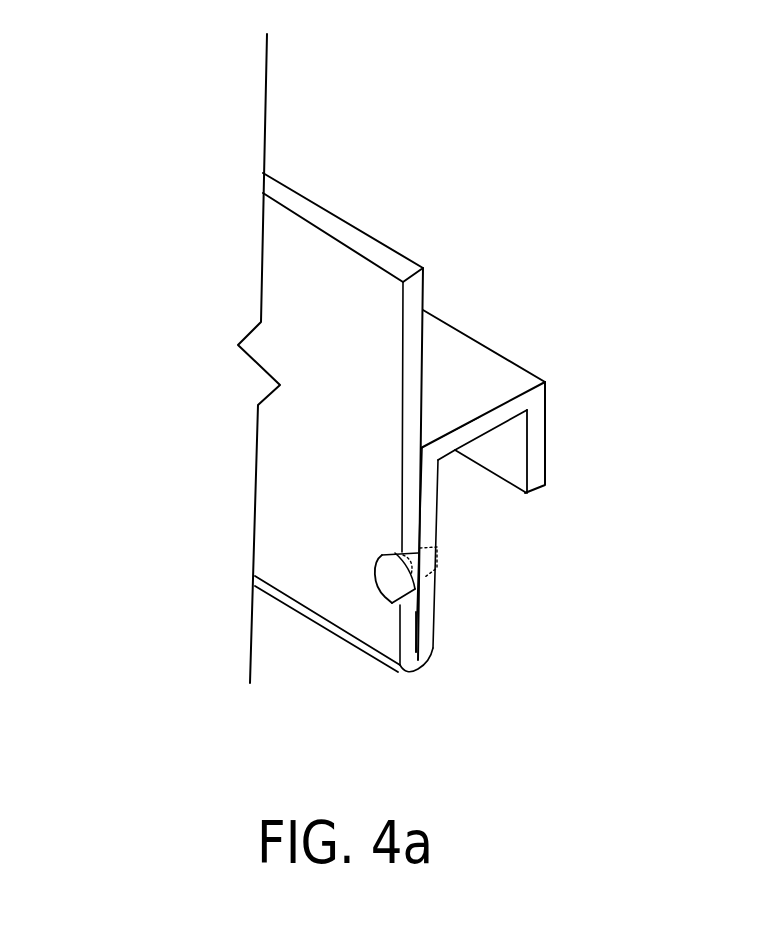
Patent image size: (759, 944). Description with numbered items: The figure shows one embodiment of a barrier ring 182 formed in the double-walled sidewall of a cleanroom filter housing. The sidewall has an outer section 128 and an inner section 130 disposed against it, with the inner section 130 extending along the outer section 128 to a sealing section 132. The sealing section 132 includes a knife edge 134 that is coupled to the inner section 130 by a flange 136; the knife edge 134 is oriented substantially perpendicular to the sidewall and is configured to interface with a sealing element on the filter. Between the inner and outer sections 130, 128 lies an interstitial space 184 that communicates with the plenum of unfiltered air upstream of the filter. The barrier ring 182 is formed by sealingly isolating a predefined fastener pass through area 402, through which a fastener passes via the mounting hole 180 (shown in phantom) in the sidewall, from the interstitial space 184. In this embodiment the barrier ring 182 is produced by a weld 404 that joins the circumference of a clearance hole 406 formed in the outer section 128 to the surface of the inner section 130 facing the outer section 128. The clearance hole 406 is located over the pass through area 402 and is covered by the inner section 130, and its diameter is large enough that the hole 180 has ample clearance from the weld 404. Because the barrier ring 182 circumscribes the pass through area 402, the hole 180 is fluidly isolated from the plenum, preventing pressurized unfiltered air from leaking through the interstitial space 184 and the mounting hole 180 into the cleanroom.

The outer section 128 is at (407, 375).
The inner section 130 is at (437, 515).
The sealing section 132 is at (425, 435).
The knife edge 134 is at (542, 472).
The flange 136 is at (486, 427).
The mounting hole 180 is at (445, 592).
The barrier ring 182 is at (378, 570).
The interstitial space 184 is at (475, 416).
The fastener pass through area 402 is at (385, 605).
The weld 404 is at (397, 573).
The clearance hole 406 is at (416, 608).